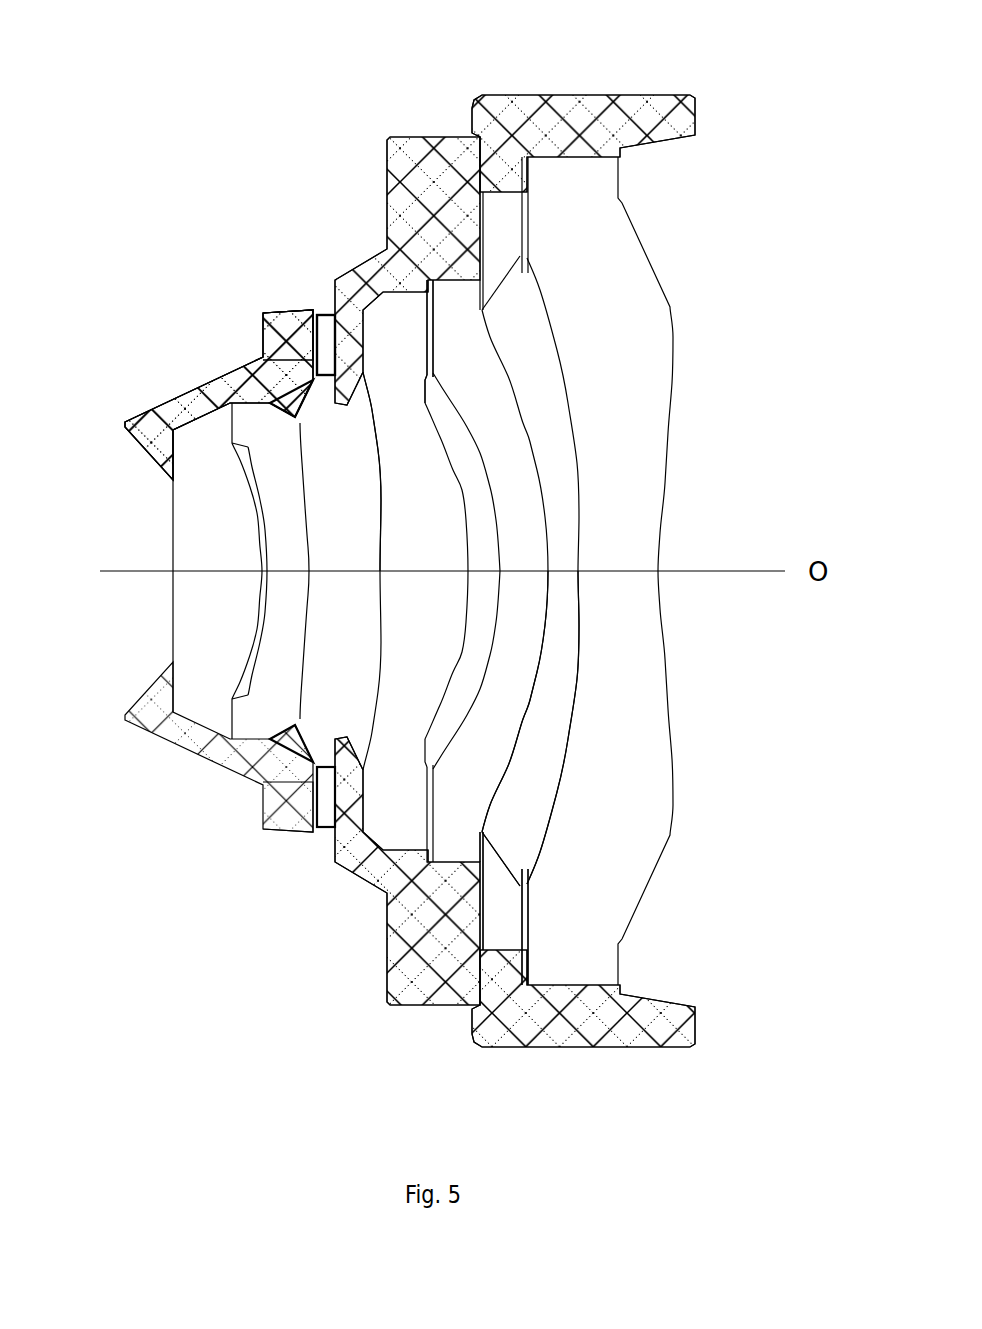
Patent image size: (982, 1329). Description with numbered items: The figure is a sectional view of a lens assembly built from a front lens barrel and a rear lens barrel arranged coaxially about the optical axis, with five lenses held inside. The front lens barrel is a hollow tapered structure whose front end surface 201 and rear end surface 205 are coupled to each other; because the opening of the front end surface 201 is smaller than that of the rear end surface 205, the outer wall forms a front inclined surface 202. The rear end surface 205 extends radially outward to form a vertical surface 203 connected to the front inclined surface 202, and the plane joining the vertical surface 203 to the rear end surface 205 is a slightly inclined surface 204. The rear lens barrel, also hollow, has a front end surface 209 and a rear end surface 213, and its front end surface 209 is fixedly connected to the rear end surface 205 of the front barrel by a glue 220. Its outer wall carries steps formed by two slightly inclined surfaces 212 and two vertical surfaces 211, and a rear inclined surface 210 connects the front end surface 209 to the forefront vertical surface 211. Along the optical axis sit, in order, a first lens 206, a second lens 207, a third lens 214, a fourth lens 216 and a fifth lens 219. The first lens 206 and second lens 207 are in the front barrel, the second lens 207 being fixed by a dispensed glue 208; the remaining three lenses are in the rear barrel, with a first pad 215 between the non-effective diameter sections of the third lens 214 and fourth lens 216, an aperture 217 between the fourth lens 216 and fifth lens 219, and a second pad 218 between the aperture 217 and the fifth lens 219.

The front end surface 201 is at (125, 423).
The front inclined surface 202 is at (190, 390).
The vertical surface 203 is at (263, 335).
The slightly inclined surface 204 is at (288, 310).
The rear end surface 205 is at (318, 318).
The first lens 206 is at (200, 698).
The second lens 207 is at (260, 710).
The dispensed glue 208 is at (260, 827).
The front end surface 209 is at (333, 300).
The rear inclined surface 210 is at (358, 268).
The vertical surfaces 211 is at (472, 122).
The slightly inclined surfaces 212 is at (563, 93).
The rear end surface 213 is at (697, 108).
The third lens 214 is at (390, 812).
The first pad 215 is at (453, 825).
The fourth lens 216 is at (480, 857).
The aperture 217 is at (493, 913).
The second pad 218 is at (522, 980).
The fifth lens 219 is at (590, 920).
The glue 220 is at (323, 815).